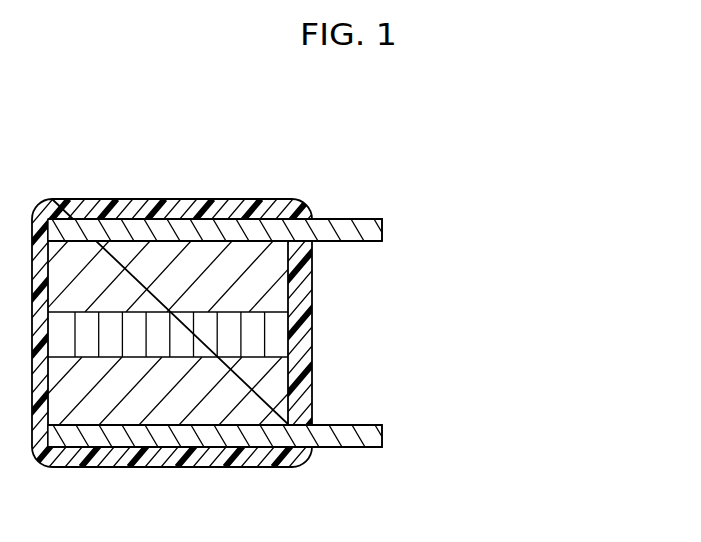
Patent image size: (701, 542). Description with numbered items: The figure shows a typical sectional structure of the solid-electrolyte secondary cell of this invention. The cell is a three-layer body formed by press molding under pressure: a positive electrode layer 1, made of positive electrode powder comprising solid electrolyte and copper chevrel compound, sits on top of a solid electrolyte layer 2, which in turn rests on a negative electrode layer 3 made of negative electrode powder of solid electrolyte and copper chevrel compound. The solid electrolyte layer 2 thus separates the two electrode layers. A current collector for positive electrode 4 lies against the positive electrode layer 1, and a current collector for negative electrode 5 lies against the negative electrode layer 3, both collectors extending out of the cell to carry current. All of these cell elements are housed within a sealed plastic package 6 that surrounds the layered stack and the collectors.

The positive electrode layer 1 is at (272, 272).
The solid electrolyte layer 2 is at (272, 333).
The negative electrode layer 3 is at (275, 393).
The current collector for positive electrode 4 is at (366, 226).
The current collector for negative electrode 5 is at (357, 447).
The sealed plastic package 6 is at (125, 459).